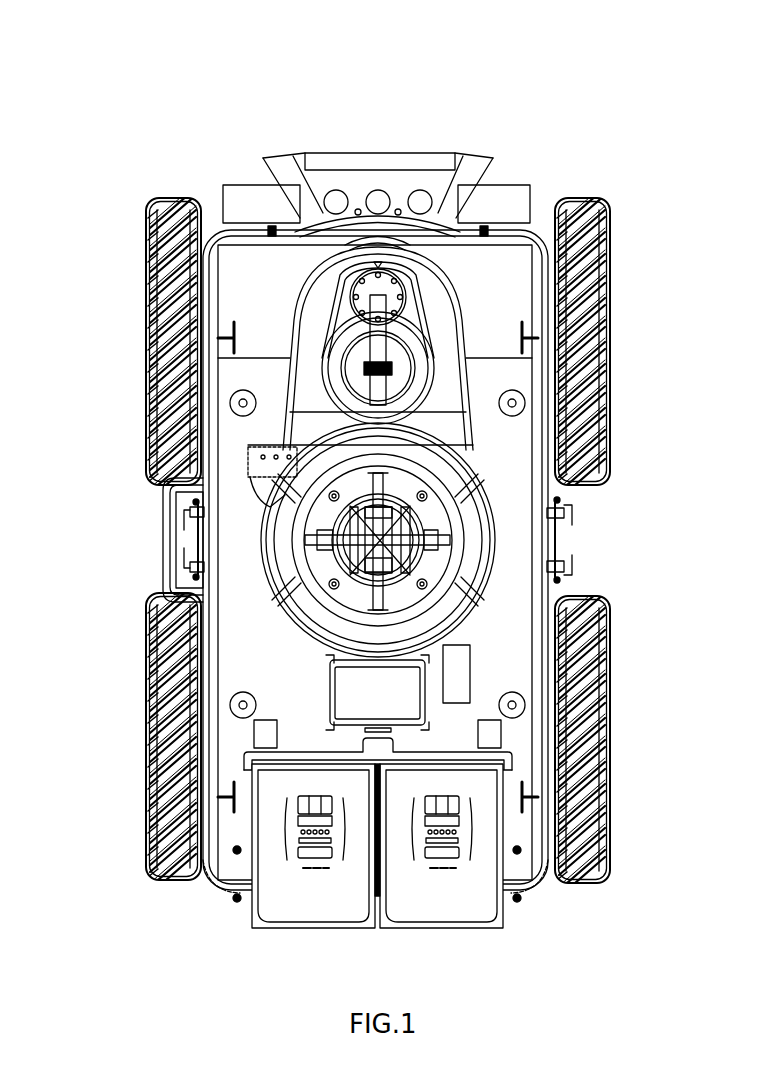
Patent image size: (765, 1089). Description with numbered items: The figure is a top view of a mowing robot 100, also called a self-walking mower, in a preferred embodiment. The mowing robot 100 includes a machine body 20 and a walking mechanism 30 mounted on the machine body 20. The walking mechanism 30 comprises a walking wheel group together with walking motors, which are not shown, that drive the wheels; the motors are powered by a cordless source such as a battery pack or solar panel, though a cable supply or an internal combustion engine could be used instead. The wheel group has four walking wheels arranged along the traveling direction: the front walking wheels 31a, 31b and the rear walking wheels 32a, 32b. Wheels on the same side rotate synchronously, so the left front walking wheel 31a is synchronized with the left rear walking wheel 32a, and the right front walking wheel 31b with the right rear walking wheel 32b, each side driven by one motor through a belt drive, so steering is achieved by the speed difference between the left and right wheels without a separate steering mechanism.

The mowing robot 100 is at (677, 49).
The machine body 20 is at (262, 267).
The walking mechanism 30 is at (138, 351).
The left front walking wheel 31a is at (146, 390).
The right front walking wheel 31b is at (583, 375).
The left rear walking wheel 32a is at (150, 742).
The right rear walking wheel 32b is at (585, 720).